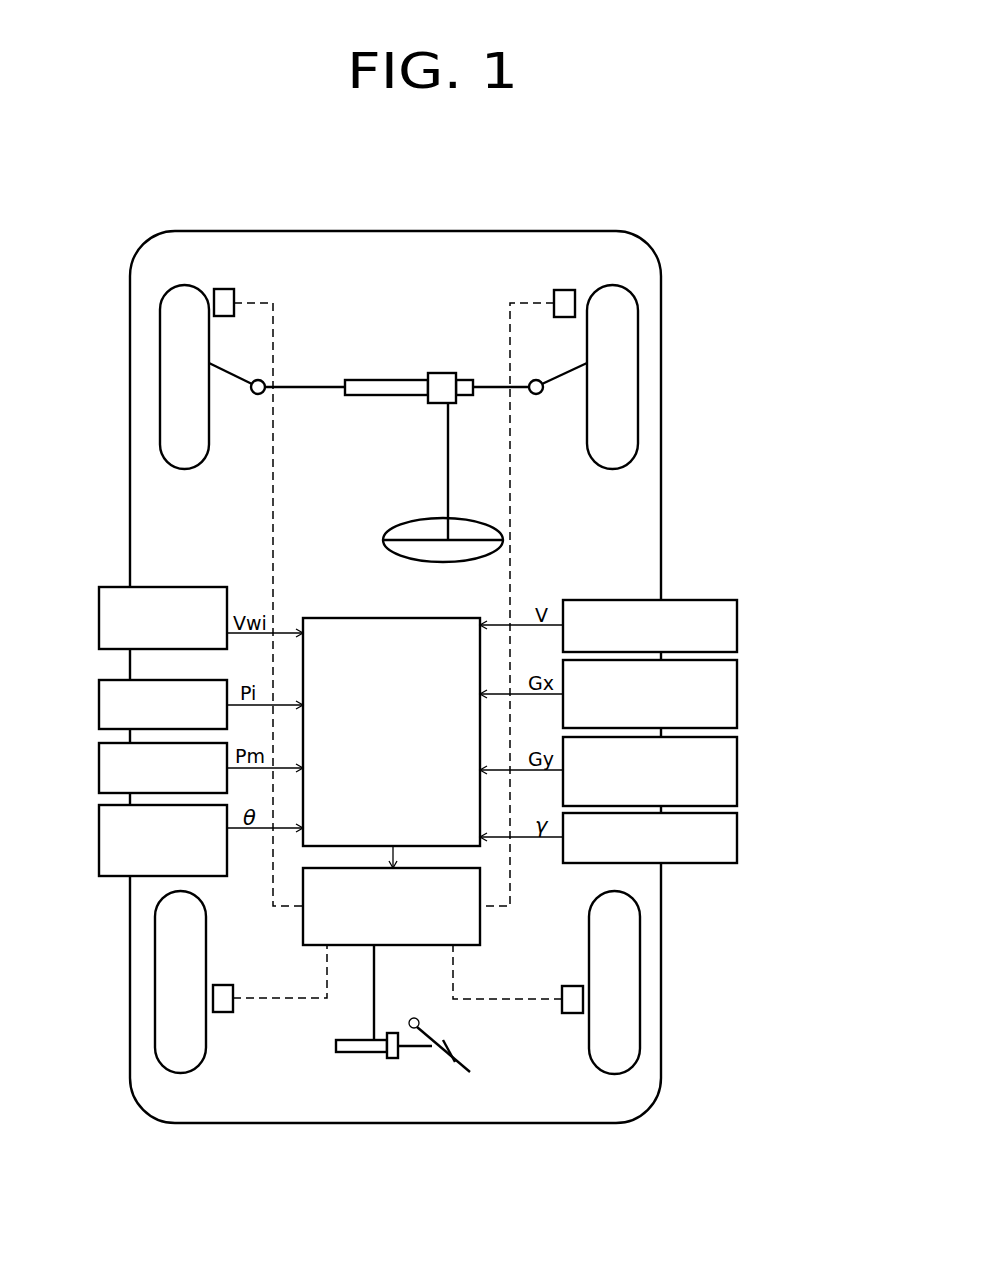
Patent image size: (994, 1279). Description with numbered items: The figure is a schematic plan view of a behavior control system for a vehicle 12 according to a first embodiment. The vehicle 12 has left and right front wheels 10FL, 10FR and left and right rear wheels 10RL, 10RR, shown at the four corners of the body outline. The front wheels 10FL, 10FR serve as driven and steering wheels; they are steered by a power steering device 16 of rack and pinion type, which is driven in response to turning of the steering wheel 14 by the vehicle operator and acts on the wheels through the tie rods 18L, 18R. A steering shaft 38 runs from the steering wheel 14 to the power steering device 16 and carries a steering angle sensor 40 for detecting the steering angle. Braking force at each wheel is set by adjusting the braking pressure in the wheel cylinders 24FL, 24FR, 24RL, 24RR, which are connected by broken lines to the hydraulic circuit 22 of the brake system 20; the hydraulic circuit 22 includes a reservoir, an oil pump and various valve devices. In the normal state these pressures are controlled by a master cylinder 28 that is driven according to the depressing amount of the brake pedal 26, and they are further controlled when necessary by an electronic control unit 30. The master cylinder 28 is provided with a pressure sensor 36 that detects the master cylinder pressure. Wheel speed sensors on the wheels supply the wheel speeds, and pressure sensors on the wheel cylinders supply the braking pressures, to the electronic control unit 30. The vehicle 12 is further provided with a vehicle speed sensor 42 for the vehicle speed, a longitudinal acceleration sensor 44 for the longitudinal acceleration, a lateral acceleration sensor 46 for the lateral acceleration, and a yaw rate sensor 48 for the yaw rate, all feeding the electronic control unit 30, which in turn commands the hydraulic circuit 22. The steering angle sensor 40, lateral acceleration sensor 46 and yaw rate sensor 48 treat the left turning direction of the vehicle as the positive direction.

The vehicle 12 is at (661, 512).
The left front wheel 10FL is at (160, 381).
The right front wheel 10FR is at (638, 380).
The left rear wheel 10RL is at (156, 990).
The right rear wheel 10RR is at (640, 1000).
The steering wheel 14 is at (460, 562).
The power steering device 16 is at (418, 357).
The left tie rod 18L is at (237, 378).
The right tie rod 18R is at (565, 374).
The brake system 20 is at (320, 1032).
The hydraulic circuit 22 is at (378, 941).
The left front wheel cylinder 24FL is at (222, 289).
The right front wheel cylinder 24FR is at (563, 290).
The left rear wheel cylinder 24RL is at (222, 985).
The right rear wheel cylinder 24RR is at (572, 986).
The brake pedal 26 is at (455, 1060).
The master cylinder 28 is at (358, 1055).
The electronic control unit 30 is at (378, 791).
The pressure sensor 36 is at (99, 768).
The steering shaft 38 is at (448, 430).
The steering angle sensor 40 is at (99, 838).
The vehicle speed sensor 42 is at (737, 625).
The longitudinal acceleration sensor 44 is at (737, 694).
The lateral acceleration sensor 46 is at (737, 770).
The yaw rate sensor 48 is at (737, 837).